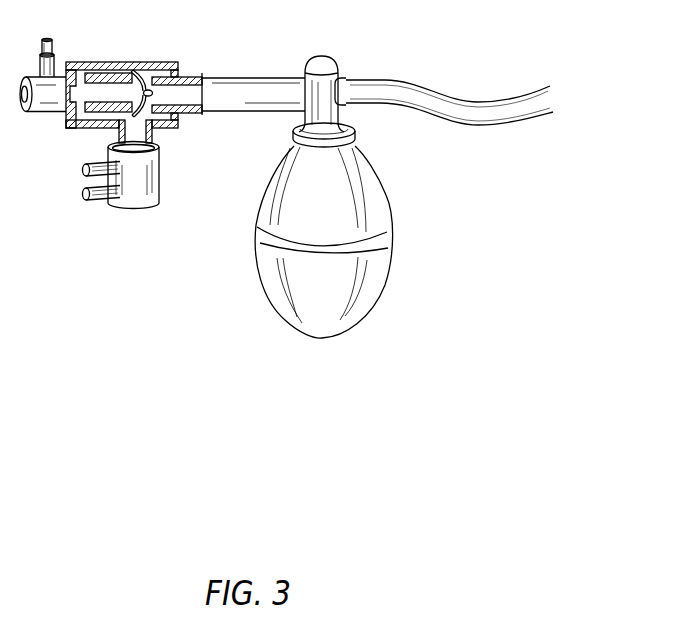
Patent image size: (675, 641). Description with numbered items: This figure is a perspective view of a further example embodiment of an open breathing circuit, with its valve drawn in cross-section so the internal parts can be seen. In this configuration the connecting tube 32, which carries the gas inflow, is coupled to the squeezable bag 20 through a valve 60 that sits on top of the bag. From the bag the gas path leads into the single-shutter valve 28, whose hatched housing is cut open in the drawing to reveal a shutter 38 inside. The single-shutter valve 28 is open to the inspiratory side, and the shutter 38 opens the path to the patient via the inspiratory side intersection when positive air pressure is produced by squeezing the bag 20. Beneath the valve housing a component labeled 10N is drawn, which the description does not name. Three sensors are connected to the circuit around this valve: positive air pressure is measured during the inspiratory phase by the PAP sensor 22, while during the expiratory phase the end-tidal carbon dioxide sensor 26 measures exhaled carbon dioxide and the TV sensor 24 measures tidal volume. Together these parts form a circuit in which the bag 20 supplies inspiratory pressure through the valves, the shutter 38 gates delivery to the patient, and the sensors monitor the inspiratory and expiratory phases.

The nasal aspirator / canister 10N is at (147, 207).
The bag 20 is at (374, 196).
The PAP sensor 22 is at (82, 170).
The TV sensor 24 is at (47, 38).
The ETCO2 sensor 26 is at (82, 195).
The single-shutter valve 28 is at (168, 72).
The connecting tube 32 is at (420, 93).
The shutter 38 is at (134, 70).
The valve 60 is at (333, 60).